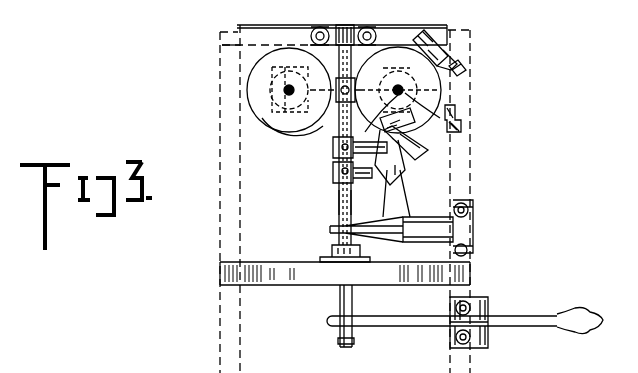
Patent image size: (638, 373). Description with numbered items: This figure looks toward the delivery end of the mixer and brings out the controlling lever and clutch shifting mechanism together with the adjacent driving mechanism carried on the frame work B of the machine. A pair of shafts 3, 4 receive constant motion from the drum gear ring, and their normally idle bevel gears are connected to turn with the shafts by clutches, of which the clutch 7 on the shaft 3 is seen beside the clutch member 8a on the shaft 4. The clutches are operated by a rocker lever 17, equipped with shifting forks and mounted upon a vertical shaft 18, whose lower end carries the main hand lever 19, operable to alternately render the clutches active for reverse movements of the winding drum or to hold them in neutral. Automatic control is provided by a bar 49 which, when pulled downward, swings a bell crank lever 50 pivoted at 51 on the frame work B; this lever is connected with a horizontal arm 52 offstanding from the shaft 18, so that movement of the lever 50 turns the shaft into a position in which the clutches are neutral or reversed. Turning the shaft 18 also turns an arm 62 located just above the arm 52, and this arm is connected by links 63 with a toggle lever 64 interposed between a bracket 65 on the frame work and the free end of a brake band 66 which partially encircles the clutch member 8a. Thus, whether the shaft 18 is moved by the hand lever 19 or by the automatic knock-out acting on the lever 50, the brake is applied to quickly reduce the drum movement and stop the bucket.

The frame work B is at (240, 45).
The brake band 66 is at (352, 45).
The clutch 7 is at (270, 65).
The shaft 3 is at (288, 91).
The rocker lever 17 is at (323, 132).
The shaft 4 is at (403, 90).
The clutch member 8a is at (422, 70).
The bracket 65 is at (446, 107).
The arm 62 is at (405, 100).
The links 63 is at (413, 160).
The toggle lever 64 is at (408, 152).
The horizontal arm 52 is at (370, 170).
The vertical shaft 18 is at (340, 199).
The pivot 51 is at (455, 228).
The bell crank lever 50 is at (400, 247).
The bar 49 is at (347, 300).
The main hand lever 19 is at (513, 318).